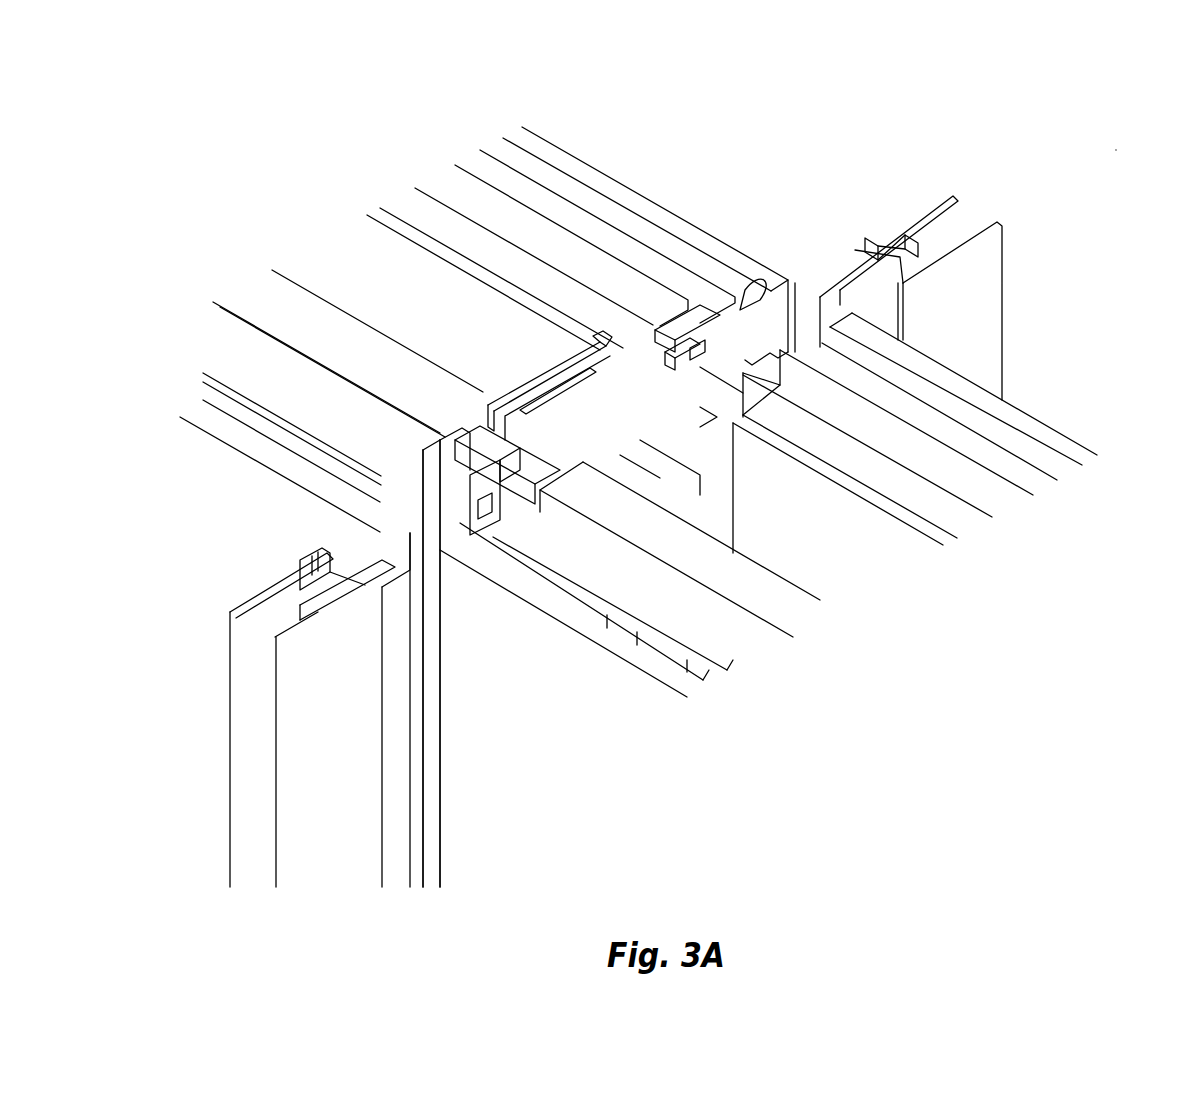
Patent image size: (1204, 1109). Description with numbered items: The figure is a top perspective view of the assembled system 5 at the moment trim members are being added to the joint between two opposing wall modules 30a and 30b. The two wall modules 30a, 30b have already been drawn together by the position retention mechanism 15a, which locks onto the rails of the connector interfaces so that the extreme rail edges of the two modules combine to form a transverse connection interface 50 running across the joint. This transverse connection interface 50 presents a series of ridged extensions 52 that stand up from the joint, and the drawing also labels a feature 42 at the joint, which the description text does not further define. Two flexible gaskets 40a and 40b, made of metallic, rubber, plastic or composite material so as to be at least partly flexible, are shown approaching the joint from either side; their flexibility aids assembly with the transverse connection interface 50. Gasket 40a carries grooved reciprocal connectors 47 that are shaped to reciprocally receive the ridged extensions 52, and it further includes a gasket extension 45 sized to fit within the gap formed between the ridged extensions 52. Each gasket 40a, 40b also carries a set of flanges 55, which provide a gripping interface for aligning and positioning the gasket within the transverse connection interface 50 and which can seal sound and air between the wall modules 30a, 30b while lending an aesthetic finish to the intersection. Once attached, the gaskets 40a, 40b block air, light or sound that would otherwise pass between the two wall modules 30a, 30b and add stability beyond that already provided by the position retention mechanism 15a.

The system 5 is at (1114, 154).
The position retention mechanism 15a is at (553, 352).
The wall module 30a is at (640, 175).
The wall module 30b is at (1036, 400).
The gasket 40a is at (269, 568).
The gasket 40b is at (893, 219).
The gap / slot 42 is at (802, 328).
The gasket extension 45 is at (420, 768).
The reciprocal connector 47 is at (365, 590).
The transverse connection interface 50 is at (752, 300).
The ridged extension 52 is at (668, 360).
The flange 55 is at (287, 733).